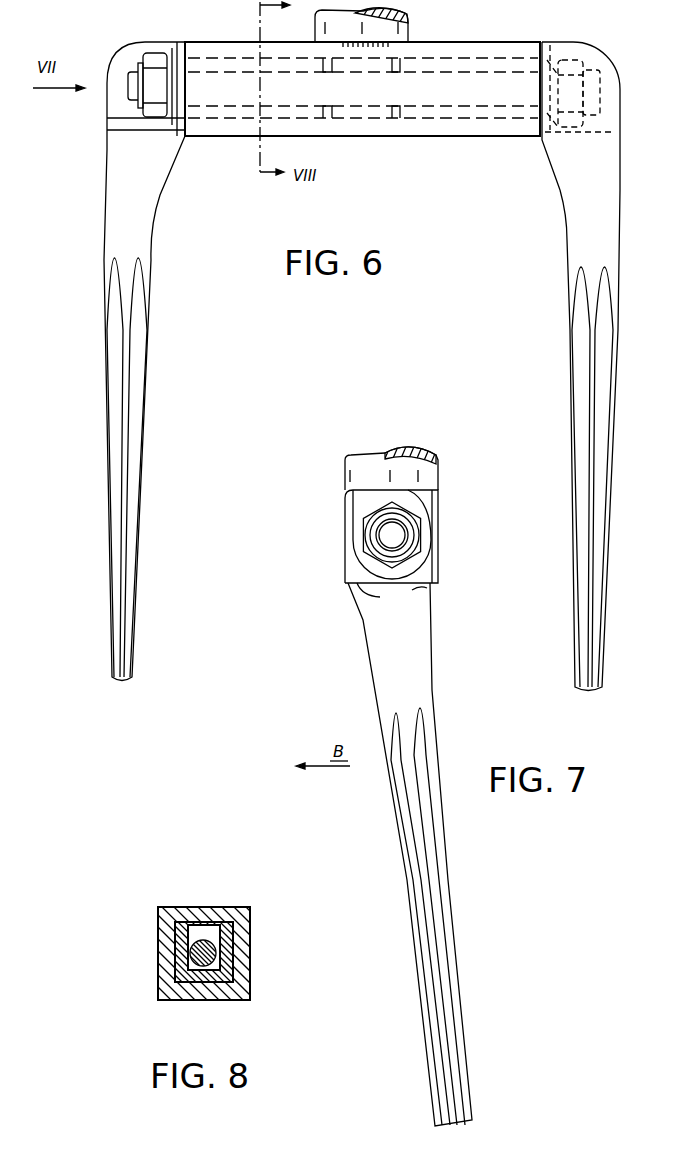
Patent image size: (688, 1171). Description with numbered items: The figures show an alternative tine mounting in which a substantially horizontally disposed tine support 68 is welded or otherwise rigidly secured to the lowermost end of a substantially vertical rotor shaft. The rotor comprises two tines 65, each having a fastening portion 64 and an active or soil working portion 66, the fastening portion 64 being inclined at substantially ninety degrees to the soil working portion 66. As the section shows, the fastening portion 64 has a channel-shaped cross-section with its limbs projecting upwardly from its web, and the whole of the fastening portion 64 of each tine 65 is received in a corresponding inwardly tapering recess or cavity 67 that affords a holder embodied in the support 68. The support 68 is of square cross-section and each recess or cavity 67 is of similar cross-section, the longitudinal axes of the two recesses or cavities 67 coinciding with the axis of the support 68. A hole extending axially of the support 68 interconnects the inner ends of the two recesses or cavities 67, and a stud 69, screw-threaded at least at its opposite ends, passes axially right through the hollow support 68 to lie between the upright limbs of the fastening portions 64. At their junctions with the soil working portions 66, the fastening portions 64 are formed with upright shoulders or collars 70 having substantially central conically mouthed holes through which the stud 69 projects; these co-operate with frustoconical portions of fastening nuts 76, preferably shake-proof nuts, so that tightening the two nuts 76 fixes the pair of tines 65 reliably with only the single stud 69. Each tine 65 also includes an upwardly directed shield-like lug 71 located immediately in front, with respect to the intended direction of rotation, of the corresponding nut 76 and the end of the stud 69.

In FIG. 6, the fastening portion 64 is at (212, 60).
In FIG. 8, the fastening portion 64 is at (227, 948).
In FIG. 6, the tine 65 is at (158, 322).
In FIG. 7, the tine 65 is at (390, 818).
In FIG. 6, the active or soil working portion 66 is at (592, 410).
In FIG. 7, the active or soil working portion 66 is at (417, 985).
In FIG. 6, the recess or cavity 67 is at (387, 112).
In FIG. 8, the recess or cavity 67 is at (210, 927).
In FIG. 6, the tine support 68 is at (430, 44).
In FIG. 8, the tine support 68 is at (188, 889).
In FIG. 6, the stud 69 is at (437, 105).
In FIG. 7, the stud 69 is at (396, 537).
In FIG. 8, the stud 69 is at (190, 958).
In FIG. 6, the upright shoulder or collar 70 is at (176, 40).
In FIG. 7, the upright shoulder or collar 70 is at (398, 462).
In FIG. 6, the shield-like lug 71 is at (120, 63).
In FIG. 7, the shield-like lug 71 is at (343, 518).
In FIG. 6, the fastening nut 76 is at (155, 56).
In FIG. 7, the fastening nut 76 is at (395, 572).